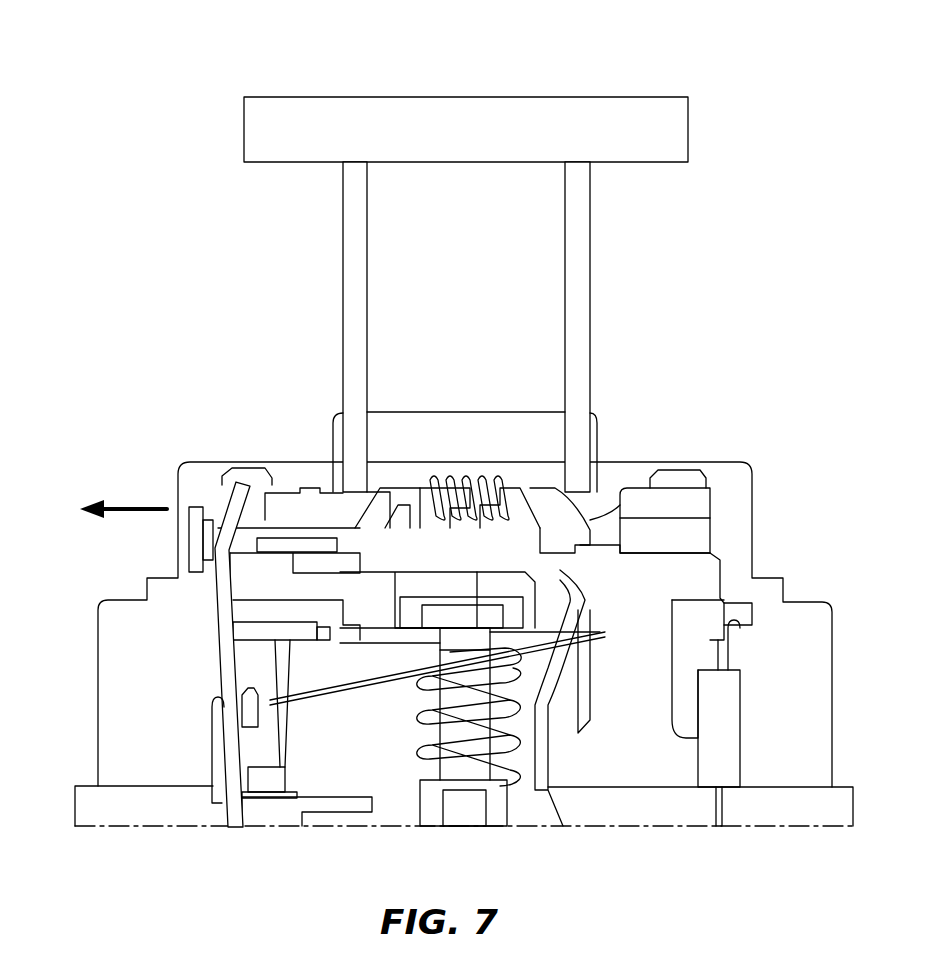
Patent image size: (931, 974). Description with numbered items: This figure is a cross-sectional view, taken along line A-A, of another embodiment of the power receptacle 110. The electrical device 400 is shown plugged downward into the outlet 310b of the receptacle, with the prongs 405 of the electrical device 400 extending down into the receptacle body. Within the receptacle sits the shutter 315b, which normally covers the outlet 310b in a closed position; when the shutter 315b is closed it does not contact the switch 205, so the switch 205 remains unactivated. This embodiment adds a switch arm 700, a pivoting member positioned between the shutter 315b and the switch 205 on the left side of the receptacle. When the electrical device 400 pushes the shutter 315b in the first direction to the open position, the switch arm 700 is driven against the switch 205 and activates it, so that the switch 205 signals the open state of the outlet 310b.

The power receptacle 110 is at (177, 241).
The electrical device 400 is at (307, 118).
The plunger legs 405 is at (352, 240).
The outlet 310b is at (308, 442).
The shutter 315b is at (675, 505).
The switch 205 is at (197, 548).
The switch arm 700 is at (228, 670).